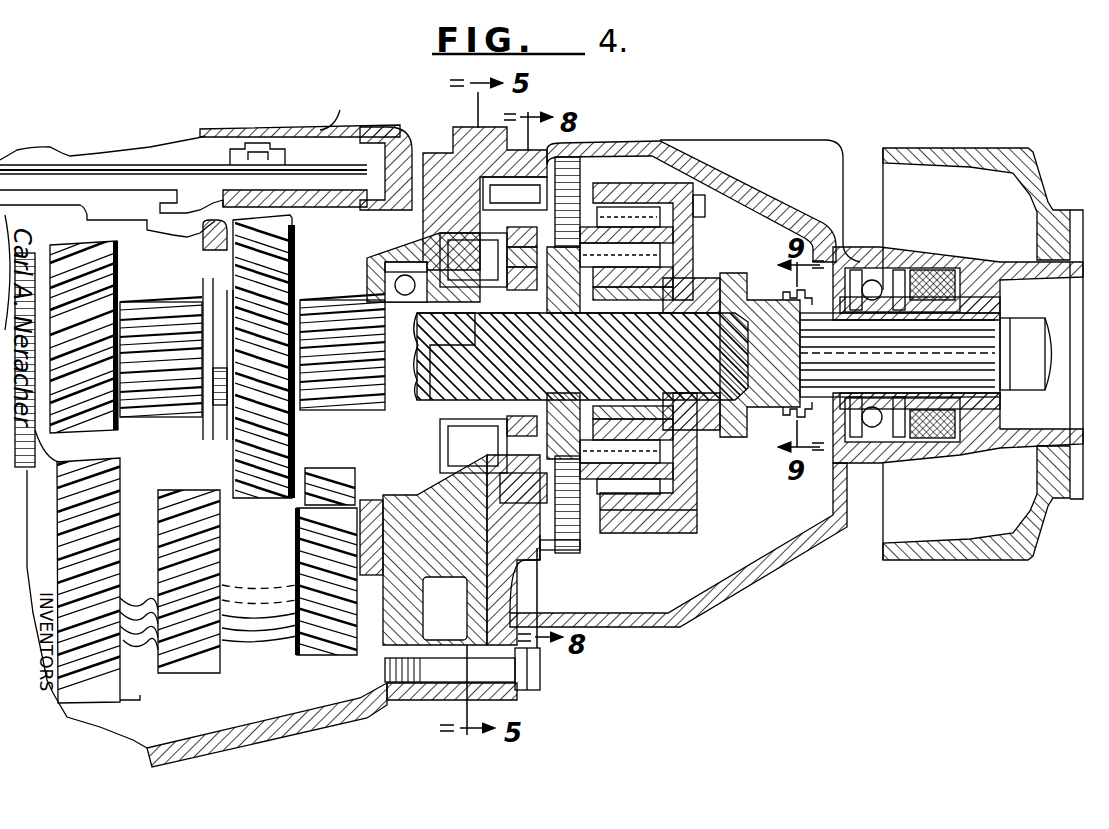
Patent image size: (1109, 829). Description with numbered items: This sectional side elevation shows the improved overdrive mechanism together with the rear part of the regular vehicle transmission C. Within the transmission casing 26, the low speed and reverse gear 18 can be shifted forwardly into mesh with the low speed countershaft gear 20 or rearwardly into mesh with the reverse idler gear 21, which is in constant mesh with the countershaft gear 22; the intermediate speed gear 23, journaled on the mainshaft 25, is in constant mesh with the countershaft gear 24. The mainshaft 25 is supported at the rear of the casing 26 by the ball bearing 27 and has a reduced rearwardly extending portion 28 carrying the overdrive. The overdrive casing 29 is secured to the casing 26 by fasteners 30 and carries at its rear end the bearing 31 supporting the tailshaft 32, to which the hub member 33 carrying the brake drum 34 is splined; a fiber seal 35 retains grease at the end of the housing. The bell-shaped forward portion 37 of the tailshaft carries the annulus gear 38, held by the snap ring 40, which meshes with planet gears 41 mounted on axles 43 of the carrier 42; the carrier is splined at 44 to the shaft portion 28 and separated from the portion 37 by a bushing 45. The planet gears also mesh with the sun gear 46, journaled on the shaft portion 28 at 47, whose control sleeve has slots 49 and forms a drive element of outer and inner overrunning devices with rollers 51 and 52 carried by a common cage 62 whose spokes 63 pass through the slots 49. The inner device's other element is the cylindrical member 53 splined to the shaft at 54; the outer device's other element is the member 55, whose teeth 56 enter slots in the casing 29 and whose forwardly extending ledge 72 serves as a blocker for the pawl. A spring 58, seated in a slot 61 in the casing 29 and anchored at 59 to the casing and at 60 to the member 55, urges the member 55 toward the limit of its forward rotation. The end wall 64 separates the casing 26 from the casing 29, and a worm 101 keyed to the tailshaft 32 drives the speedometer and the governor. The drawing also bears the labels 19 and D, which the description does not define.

The transmission housing 19 is at (133, 200).
The transmission C is at (335, 112).
The housing cover D is at (655, 150).
The low speed and reverse gear 18 is at (295, 252).
The low speed countershaft gear 20 is at (187, 492).
The reverse idler gear 21 is at (334, 473).
The countershaft gear 22 is at (315, 660).
The intermediate speed gear 23 is at (112, 282).
The countershaft gear 24 is at (112, 578).
The mainshaft 25 is at (190, 418).
The transmission casing 26 is at (375, 742).
The anti-friction ball bearing 27 is at (395, 287).
The reduced rearwardly extending portion 28 is at (398, 378).
The casing 29 is at (735, 602).
The fasteners 30 is at (540, 688).
The anti-friction bearing 31 is at (870, 262).
The tailshaft 32 is at (970, 440).
The hub member 33 is at (941, 354).
The drum 34 is at (975, 150).
The fiber seal 35 is at (935, 268).
The enlarged bell-shaped forward portion 37 is at (690, 228).
The annulus gear 38 is at (643, 233).
The snap ring 40 is at (690, 480).
The planet gears 41 is at (645, 500).
The carrier 42 is at (652, 450).
The axles 43 is at (596, 347).
The spline 44 is at (581, 356).
The bushing 45 is at (731, 339).
The sun gear 46 is at (590, 323).
The journal 47 is at (645, 323).
The slots 49 is at (450, 550).
The rollers 51 is at (522, 237).
The rollers 52 is at (522, 278).
The cylindrical member 53 is at (446, 279).
The spline 54 is at (472, 380).
The member 55 is at (510, 323).
The teeth 56 is at (542, 555).
The spring 58 is at (572, 540).
The spring fixing point 59 is at (710, 206).
The spring fixing point 60 is at (485, 198).
The slot 61 is at (555, 160).
The cage 62 is at (493, 466).
The spokes 63 is at (522, 257).
The end wall 64 is at (450, 640).
The ledge 72 is at (423, 261).
The worm 101 is at (783, 432).